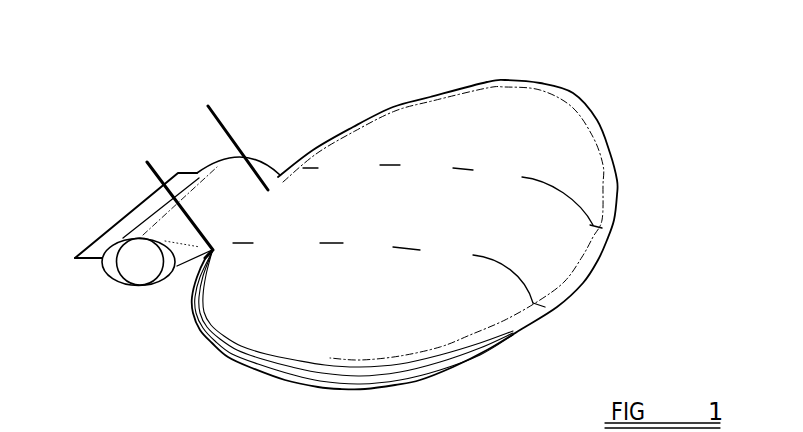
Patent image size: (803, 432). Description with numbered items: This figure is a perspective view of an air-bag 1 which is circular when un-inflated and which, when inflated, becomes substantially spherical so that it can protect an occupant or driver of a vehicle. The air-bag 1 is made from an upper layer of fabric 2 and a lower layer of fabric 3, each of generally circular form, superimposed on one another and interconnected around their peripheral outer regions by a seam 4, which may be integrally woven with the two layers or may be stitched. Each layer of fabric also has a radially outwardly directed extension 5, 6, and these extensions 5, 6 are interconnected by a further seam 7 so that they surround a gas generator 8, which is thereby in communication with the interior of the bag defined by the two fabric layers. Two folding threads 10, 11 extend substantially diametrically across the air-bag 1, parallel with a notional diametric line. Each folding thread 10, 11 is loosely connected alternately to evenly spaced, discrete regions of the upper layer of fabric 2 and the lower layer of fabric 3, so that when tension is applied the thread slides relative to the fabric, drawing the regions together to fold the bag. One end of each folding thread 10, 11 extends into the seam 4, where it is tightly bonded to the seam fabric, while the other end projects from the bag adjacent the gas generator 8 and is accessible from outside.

The air-bag 1 is at (602, 62).
The upper layer of fabric 2 is at (570, 155).
The lower layer of fabric 3 is at (447, 370).
The seam 4 is at (582, 254).
The extension 5 is at (210, 190).
The extension 6 is at (163, 280).
The further seam 7 is at (108, 231).
The gas generator 8 is at (115, 273).
The folding thread 10 is at (226, 133).
The folding thread 11 is at (150, 172).